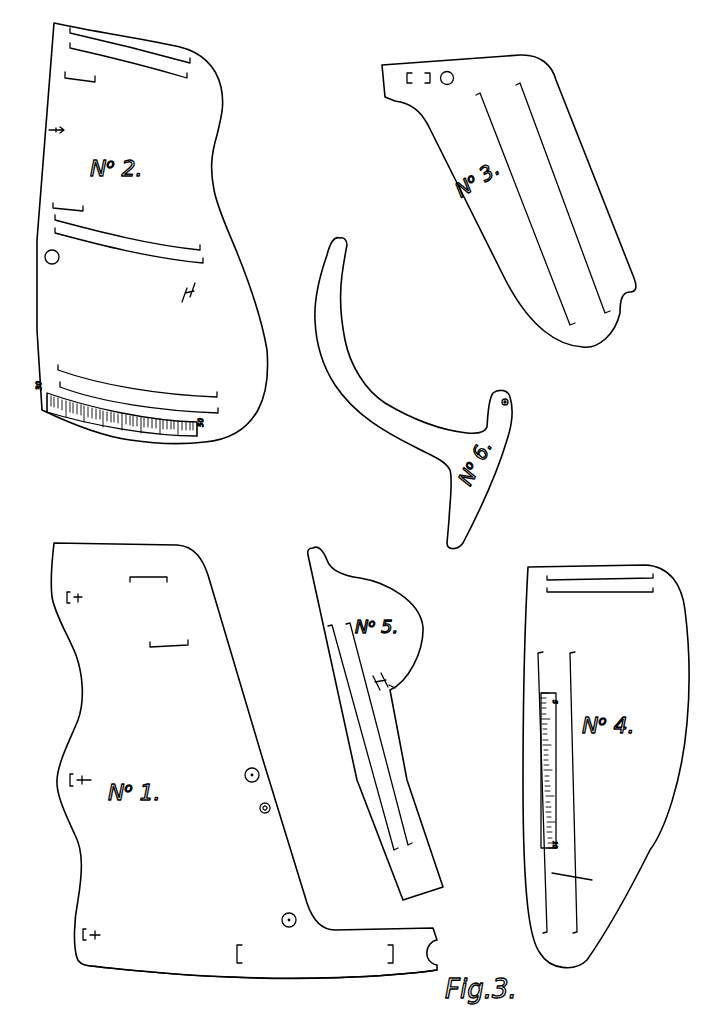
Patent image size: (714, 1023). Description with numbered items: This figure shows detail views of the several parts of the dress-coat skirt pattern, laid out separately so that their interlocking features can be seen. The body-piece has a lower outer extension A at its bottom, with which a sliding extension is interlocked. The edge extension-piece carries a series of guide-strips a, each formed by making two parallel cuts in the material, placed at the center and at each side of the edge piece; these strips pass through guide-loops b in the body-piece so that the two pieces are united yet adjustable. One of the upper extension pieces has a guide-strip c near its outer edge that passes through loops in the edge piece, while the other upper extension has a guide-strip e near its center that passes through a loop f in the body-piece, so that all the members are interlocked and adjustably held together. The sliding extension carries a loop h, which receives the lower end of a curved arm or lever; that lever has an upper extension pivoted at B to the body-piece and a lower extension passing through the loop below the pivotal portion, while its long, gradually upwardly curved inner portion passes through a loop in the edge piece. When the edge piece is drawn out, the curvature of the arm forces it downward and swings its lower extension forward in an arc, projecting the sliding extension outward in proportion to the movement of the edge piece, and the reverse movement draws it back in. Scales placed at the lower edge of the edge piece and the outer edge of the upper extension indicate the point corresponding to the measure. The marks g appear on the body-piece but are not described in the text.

The guide-strips a is at (612, 600).
The guide-loops b is at (86, 780).
The guide-strip c is at (560, 675).
The guide-strip e is at (538, 165).
The loop f is at (159, 612).
The marks g is at (89, 767).
The loop h is at (295, 623).
The lower outer extension A is at (405, 967).
The pivot B is at (391, 587).